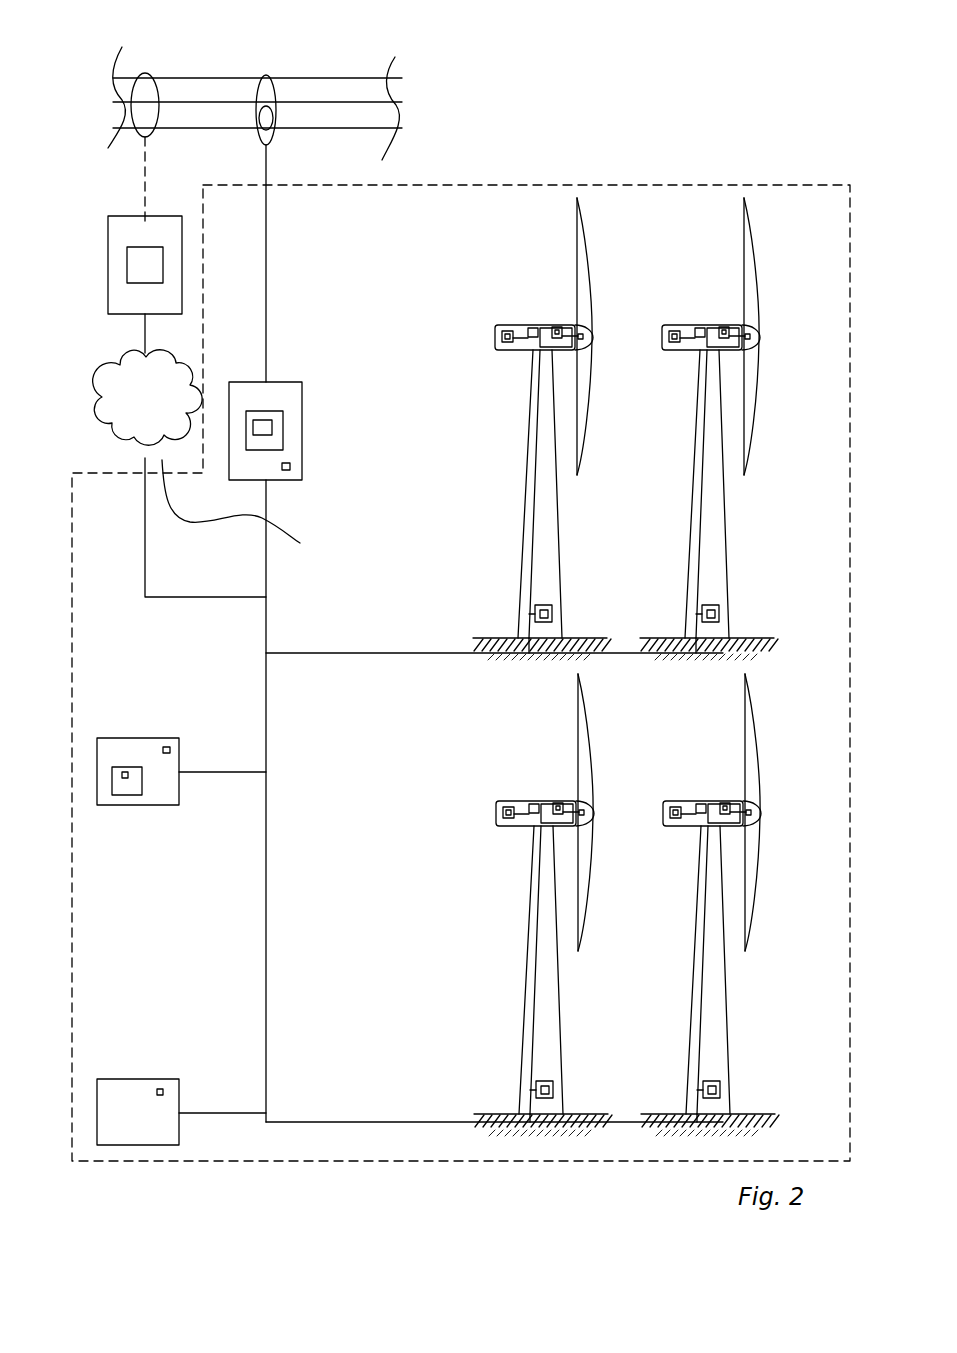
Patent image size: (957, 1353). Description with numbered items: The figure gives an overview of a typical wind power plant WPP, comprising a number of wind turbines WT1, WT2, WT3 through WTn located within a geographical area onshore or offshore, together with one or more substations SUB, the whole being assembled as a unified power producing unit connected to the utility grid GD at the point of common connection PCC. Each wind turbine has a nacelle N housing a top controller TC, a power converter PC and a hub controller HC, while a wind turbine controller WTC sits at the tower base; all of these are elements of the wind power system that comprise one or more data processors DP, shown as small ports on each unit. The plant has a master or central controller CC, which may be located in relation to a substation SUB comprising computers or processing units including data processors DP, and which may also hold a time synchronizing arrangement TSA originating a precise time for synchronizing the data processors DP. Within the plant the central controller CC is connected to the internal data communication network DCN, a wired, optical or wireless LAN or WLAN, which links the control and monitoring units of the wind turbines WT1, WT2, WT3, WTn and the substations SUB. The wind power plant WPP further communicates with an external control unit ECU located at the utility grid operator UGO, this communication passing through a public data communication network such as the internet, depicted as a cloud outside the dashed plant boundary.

The utility grid GD is at (256, 56).
The point of common connection PCC is at (274, 140).
The external control unit ECU is at (145, 257).
The utility grid operator UGO is at (187, 265).
The substation SUB is at (302, 408).
The data processor DP is at (290, 467).
The power converter PC is at (283, 438).
The data communication network DCN is at (266, 927).
The central controller CC is at (175, 738).
The time synchronizing arrangement TSA is at (127, 795).
The wind power plant WPP is at (403, 1161).
The wind turbine WT1 is at (543, 905).
The wind turbine WT2 is at (710, 905).
The wind turbine WT3 is at (515, 248).
The wind turbine WTn is at (709, 429).
The top controller TC is at (506, 331).
The hub controller HC is at (642, 547).
The nacelle N is at (602, 597).
The wind turbine controller WTC is at (670, 839).